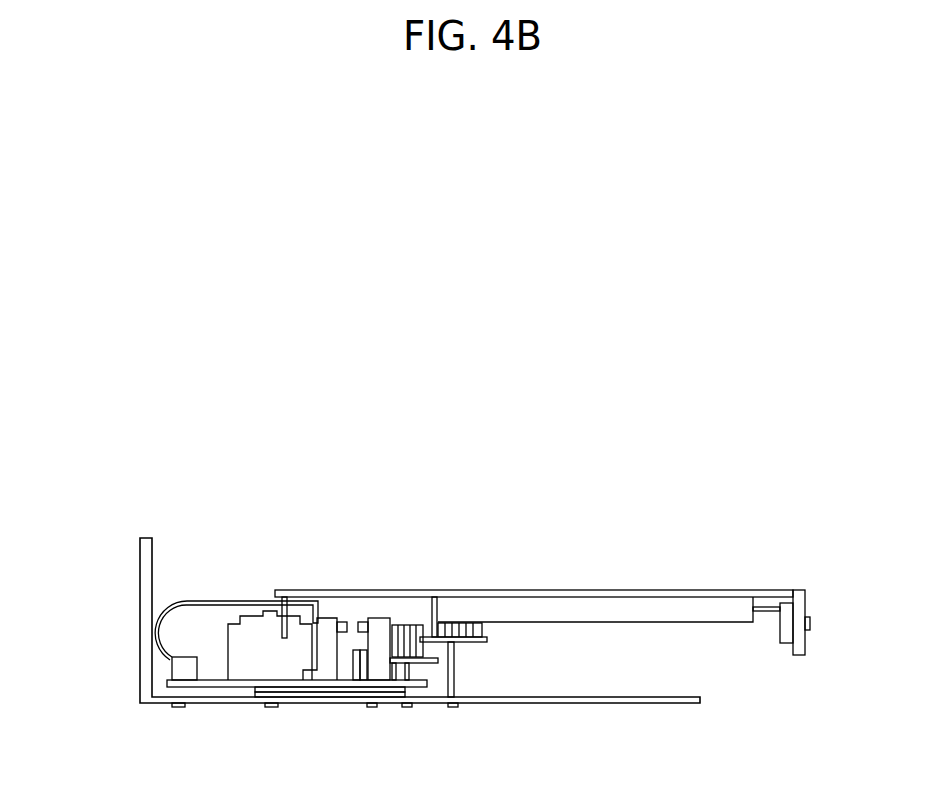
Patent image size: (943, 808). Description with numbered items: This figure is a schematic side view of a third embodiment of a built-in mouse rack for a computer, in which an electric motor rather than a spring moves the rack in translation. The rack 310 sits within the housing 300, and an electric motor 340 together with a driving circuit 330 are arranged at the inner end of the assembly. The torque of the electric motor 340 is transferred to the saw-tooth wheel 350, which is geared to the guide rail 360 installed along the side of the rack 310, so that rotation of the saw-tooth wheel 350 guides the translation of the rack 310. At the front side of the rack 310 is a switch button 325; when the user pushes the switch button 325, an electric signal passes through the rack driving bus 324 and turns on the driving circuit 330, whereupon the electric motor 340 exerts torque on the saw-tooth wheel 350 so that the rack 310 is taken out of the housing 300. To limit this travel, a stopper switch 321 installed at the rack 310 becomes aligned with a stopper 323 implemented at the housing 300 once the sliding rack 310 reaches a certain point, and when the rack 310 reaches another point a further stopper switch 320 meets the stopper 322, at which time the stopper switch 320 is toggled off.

The housing 300 is at (147, 622).
The rack 310 is at (655, 591).
The stopper switch 320 is at (383, 663).
The stopper switch 321 is at (325, 668).
The stopper 322 is at (283, 598).
The stopper 323 is at (432, 598).
The rack driving bus 324 is at (203, 603).
The switch button 325 is at (786, 632).
The driving circuit 330 is at (200, 685).
The electric motor 340 is at (253, 667).
The saw-tooth wheel 350 is at (432, 648).
The guide rail 360 is at (555, 615).